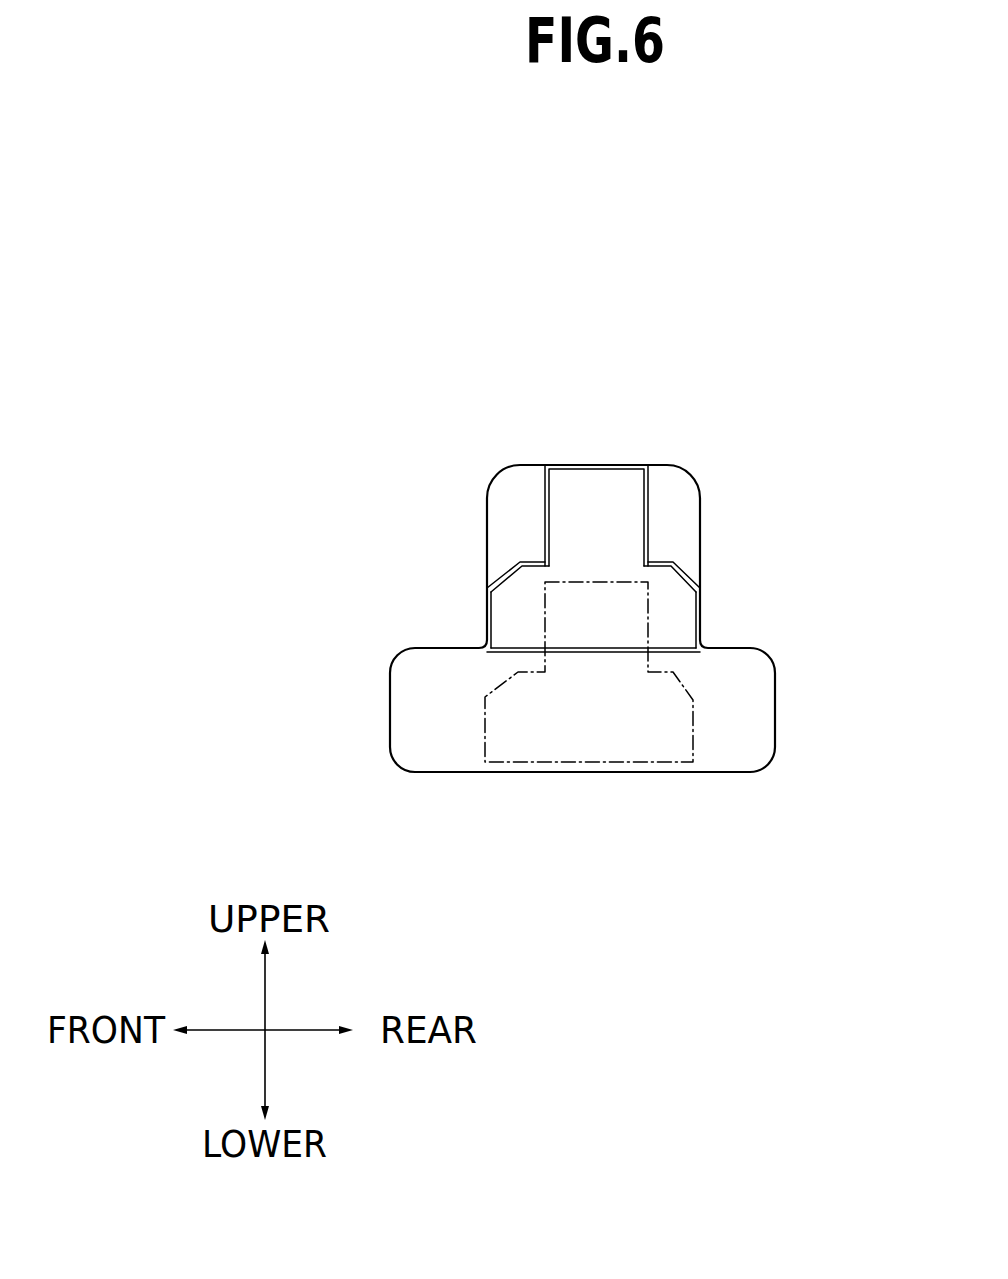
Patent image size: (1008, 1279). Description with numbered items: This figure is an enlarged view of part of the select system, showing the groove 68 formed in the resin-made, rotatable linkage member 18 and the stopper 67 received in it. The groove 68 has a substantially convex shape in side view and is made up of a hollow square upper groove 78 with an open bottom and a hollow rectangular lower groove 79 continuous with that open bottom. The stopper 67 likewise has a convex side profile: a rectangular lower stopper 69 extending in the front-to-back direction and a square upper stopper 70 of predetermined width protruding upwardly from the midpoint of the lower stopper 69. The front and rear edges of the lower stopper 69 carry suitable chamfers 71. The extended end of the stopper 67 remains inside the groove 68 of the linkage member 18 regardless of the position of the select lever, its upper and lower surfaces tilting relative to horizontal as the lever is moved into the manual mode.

The linkage member 18 is at (748, 829).
The stopper 67 is at (871, 473).
The groove 68 is at (293, 445).
The lower stopper 69 is at (683, 632).
The upper stopper 70 is at (627, 508).
The chamfers 71 is at (683, 577).
The upper groove 78 is at (497, 540).
The lower groove 79 is at (434, 660).